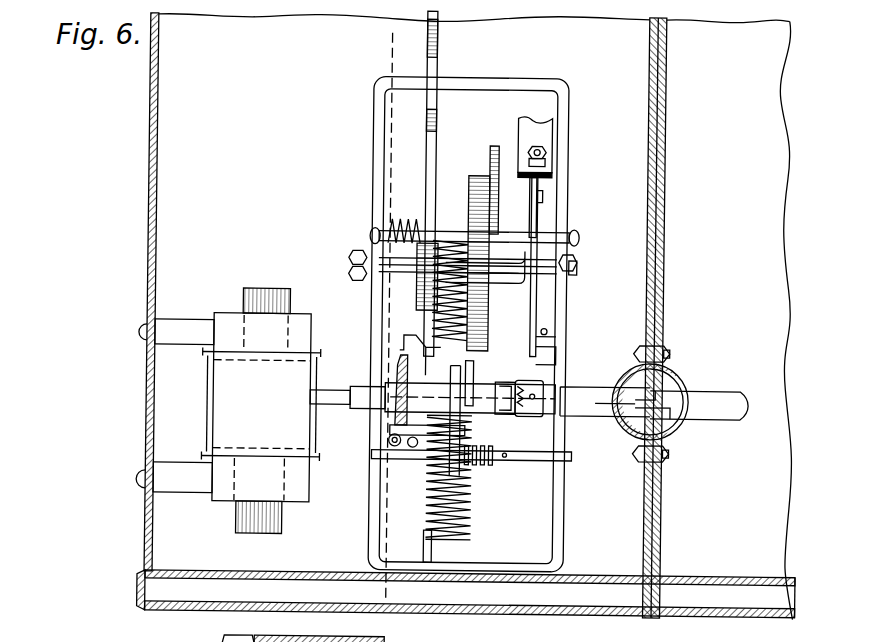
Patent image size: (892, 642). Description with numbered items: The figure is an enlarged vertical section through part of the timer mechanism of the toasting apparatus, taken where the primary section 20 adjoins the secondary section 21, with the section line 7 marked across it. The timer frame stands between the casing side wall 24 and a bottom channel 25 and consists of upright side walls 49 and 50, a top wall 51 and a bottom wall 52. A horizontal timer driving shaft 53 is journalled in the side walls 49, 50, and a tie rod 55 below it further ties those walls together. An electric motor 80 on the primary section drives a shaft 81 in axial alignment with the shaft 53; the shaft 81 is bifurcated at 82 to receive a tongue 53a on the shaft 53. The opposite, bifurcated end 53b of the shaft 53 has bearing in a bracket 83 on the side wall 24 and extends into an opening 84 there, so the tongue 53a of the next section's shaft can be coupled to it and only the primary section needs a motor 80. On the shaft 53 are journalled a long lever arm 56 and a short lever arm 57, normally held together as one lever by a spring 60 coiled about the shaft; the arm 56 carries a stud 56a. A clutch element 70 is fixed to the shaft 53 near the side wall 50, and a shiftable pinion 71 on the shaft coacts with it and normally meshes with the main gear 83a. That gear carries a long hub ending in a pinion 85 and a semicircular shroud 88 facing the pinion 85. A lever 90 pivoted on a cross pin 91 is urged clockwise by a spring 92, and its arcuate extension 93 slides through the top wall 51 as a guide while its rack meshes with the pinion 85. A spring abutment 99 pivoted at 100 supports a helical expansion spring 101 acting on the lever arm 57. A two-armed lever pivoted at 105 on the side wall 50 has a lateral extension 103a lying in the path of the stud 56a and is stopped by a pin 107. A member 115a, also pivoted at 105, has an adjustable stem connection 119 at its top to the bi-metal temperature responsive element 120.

The section line 7— 7 is at (392, 43).
The primary section 20 is at (146, 549).
The secondary section 21 is at (716, 535).
The side wall 24 is at (159, 184).
The bottom channel 25 is at (192, 616).
The side wall 49 is at (375, 114).
The side wall 50 is at (570, 153).
The top wall 51 is at (528, 82).
The bottom wall 52 is at (526, 562).
The timer driving shaft 53 is at (606, 380).
The tongue 53a is at (362, 384).
The bifurcated end 53b is at (632, 410).
The tie rod 55 is at (514, 456).
The lever arm 56 is at (407, 348).
The stud 56a is at (413, 440).
The lever arm 57 is at (396, 365).
The spring 60 is at (394, 433).
The clutch element 70 is at (532, 412).
The pinion 71 is at (508, 410).
The electric motor 80 is at (216, 296).
The shaft 81 is at (355, 390).
The bifurcated end 82 is at (330, 405).
The bracket 83 is at (642, 448).
The main gear 83a is at (498, 140).
The opening 84 is at (672, 422).
The pinion 85 is at (420, 282).
The shroud 88 is at (492, 217).
The lever 90 is at (438, 117).
The cross pin 91 is at (582, 236).
The spring 92 is at (391, 220).
The arcuate extension 93 is at (438, 46).
The spring abutment 99 is at (478, 530).
The pivot 100 is at (430, 548).
The helical expansion spring 101 is at (478, 495).
The lateral extension 103a is at (528, 300).
The pivot stud 105 is at (562, 352).
The pin 107 is at (552, 333).
The member 115a is at (540, 218).
The adjustable stem connection 119 is at (548, 146).
The temperature responsive element 120 is at (542, 130).